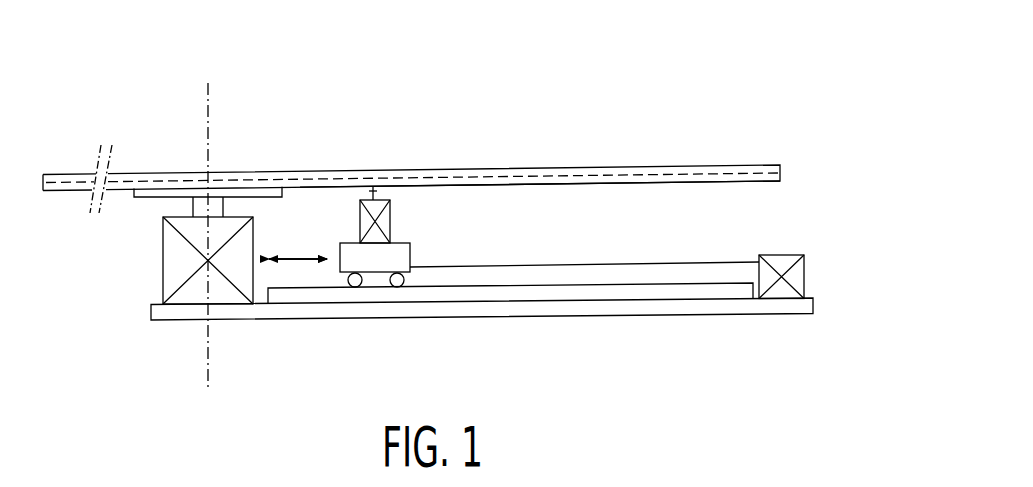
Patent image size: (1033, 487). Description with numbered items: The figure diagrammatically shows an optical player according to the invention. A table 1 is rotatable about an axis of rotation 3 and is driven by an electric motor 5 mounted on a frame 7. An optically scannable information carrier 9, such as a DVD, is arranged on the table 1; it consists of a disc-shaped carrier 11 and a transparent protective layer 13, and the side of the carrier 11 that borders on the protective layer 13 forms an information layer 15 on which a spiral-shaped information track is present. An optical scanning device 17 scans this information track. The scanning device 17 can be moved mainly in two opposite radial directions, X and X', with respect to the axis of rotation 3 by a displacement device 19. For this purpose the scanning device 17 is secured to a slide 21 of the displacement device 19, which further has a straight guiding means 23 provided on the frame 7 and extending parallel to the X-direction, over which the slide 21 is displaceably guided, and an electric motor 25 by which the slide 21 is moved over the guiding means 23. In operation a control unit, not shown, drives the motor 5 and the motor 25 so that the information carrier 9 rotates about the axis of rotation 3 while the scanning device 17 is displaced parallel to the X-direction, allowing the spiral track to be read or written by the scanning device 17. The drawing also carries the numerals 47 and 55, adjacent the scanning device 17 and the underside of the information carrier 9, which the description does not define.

The table 1 is at (148, 188).
The axis of rotation 3 is at (208, 117).
The electric motor 5 is at (172, 276).
The frame 7 is at (460, 317).
The information carrier 9 is at (674, 105).
The disc-shaped carrier 11 is at (452, 173).
The transparent protective layer 13 is at (552, 184).
The information layer 15 is at (523, 177).
The optical scanning device 17 is at (391, 228).
The displacement device 19 is at (614, 258).
The slide 21 is at (405, 257).
The straight guiding means 23 is at (525, 291).
The electric motor 25 is at (778, 256).
The connection 47 is at (372, 191).
The probe contact 55 is at (374, 185).